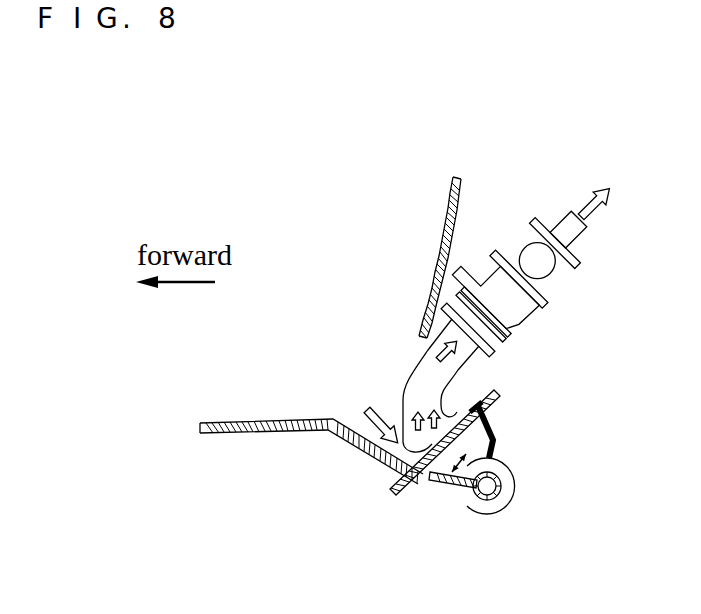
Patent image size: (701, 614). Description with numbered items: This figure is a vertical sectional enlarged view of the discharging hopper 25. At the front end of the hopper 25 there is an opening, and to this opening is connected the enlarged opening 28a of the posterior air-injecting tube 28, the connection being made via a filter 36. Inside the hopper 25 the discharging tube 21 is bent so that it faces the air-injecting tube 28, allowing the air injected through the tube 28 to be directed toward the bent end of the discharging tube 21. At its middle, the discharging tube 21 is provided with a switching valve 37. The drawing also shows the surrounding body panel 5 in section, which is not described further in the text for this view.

The body panel 5 is at (462, 178).
The discharging tube 21 is at (574, 241).
The switching valve 37 is at (546, 265).
The enlarged opening 28a is at (486, 424).
The hopper 25 is at (357, 446).
The filter 36 is at (430, 490).
The posterior air-injecting tube 28 is at (452, 482).